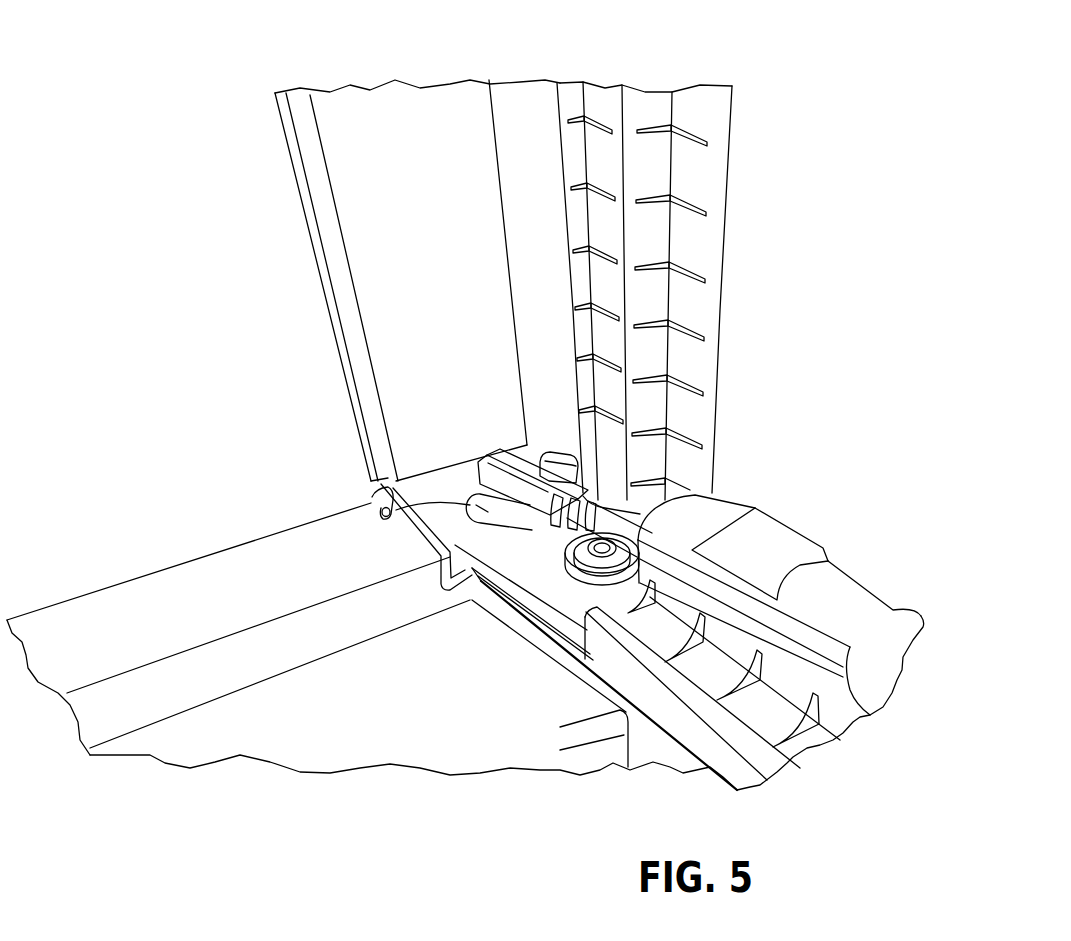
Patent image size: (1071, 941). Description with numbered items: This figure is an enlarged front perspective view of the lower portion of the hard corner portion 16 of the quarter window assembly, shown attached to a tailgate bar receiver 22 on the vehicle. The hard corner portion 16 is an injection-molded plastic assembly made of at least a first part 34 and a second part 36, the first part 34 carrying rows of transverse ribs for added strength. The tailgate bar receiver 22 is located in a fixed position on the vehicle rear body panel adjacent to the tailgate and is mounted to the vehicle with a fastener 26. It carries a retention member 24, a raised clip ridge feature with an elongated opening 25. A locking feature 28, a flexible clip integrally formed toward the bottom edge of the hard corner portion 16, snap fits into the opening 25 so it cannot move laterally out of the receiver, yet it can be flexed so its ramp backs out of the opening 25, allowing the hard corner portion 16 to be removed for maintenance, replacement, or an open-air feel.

The hard corner portion 16 is at (747, 357).
The tailgate bar receiver 22 is at (507, 600).
The retention member 24 is at (523, 531).
The elongated opening 25 is at (592, 480).
The fastener 26 is at (587, 577).
The locking feature 28 is at (382, 512).
The first part 34 is at (712, 192).
The second part 36 is at (348, 338).